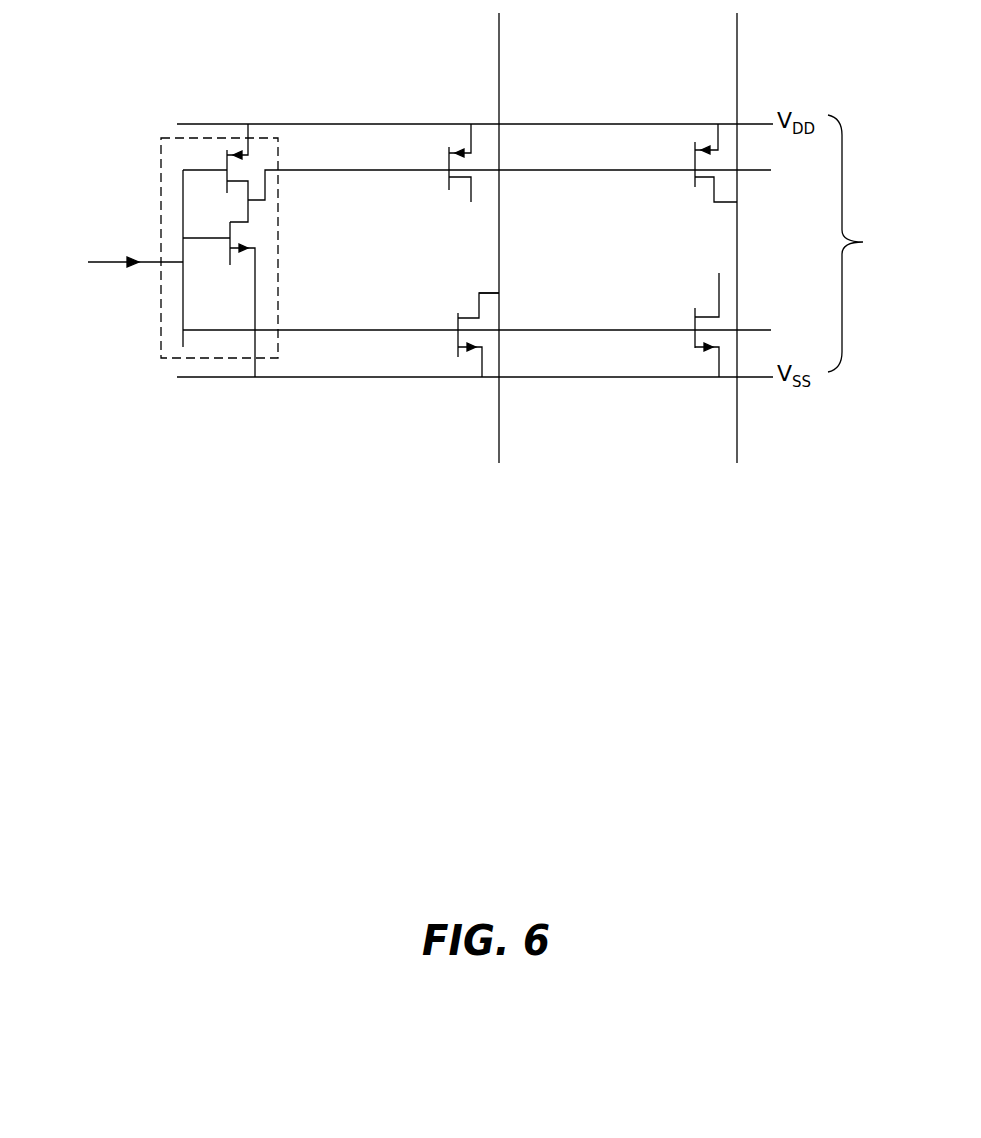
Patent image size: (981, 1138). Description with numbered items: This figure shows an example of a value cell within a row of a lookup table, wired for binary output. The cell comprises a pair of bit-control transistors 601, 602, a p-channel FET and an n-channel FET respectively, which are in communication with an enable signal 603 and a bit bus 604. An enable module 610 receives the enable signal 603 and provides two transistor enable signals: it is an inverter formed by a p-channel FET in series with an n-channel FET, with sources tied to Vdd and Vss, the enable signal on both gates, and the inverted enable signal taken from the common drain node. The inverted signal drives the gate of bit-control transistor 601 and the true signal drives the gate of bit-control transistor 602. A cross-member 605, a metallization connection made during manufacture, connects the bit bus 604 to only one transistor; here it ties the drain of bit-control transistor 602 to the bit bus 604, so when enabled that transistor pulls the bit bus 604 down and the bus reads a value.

The bit-control transistor 601 is at (449, 172).
The bit-control transistor 602 is at (457, 322).
The enable signal 603 is at (115, 263).
The bit bus 604 is at (499, 66).
The cross-member 605 is at (494, 291).
The enable module 610 is at (161, 205).